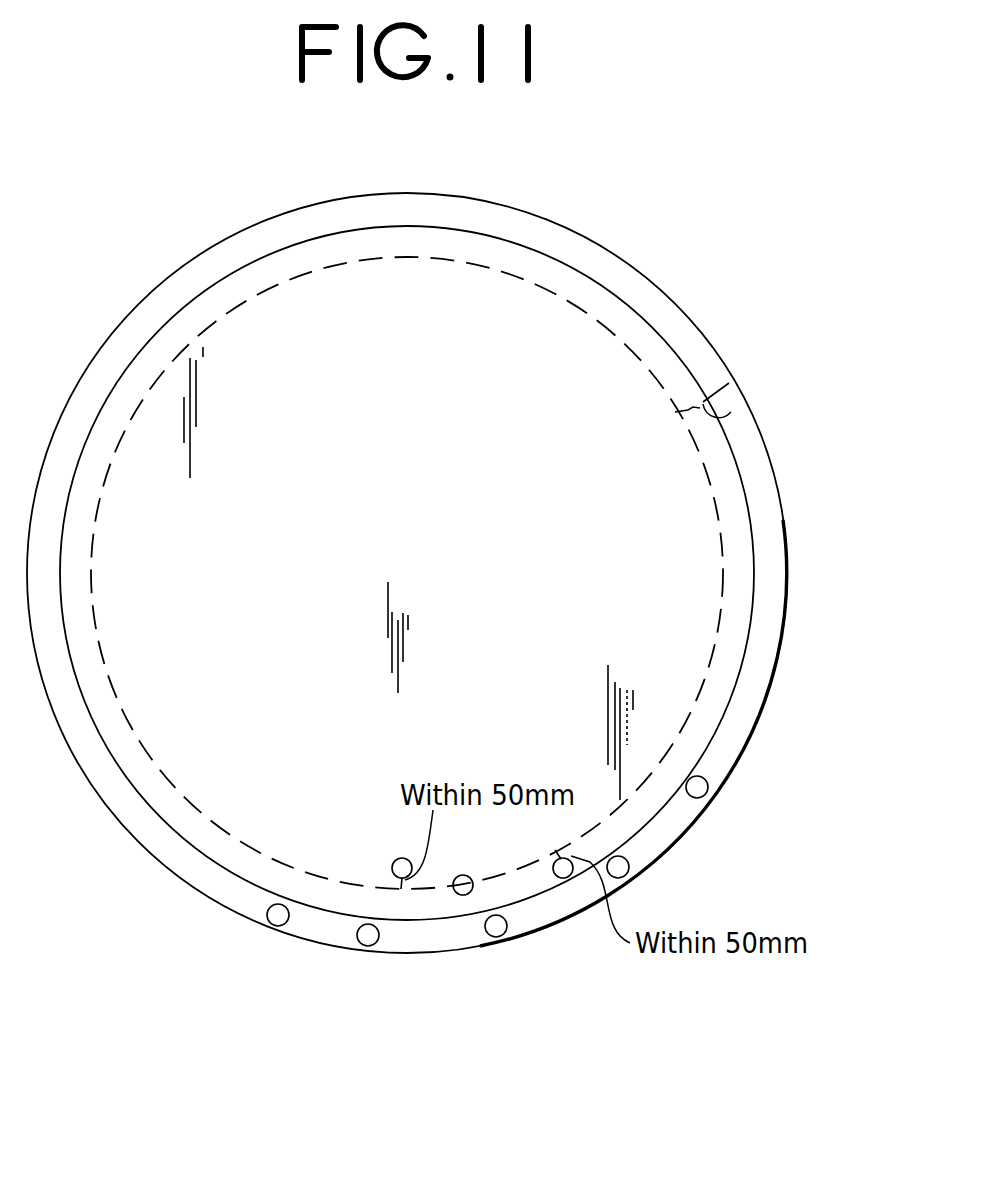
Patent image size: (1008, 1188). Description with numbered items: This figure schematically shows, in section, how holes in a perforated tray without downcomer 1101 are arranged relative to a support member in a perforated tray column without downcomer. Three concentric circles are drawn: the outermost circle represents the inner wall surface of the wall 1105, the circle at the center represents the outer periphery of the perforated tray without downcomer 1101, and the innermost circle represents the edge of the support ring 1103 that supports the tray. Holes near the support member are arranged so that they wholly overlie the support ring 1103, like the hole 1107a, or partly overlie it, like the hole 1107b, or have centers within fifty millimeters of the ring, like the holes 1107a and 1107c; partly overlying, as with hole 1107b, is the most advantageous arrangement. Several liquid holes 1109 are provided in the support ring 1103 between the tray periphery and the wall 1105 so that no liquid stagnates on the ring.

The perforated tray without downcomer 1101 is at (655, 328).
The support ring 1103 is at (731, 412).
The wall 1105 is at (777, 485).
The hole 1107a is at (556, 878).
The hole 1107b is at (466, 875).
The hole 1107c is at (402, 858).
The liquid hole 1109 is at (268, 922).